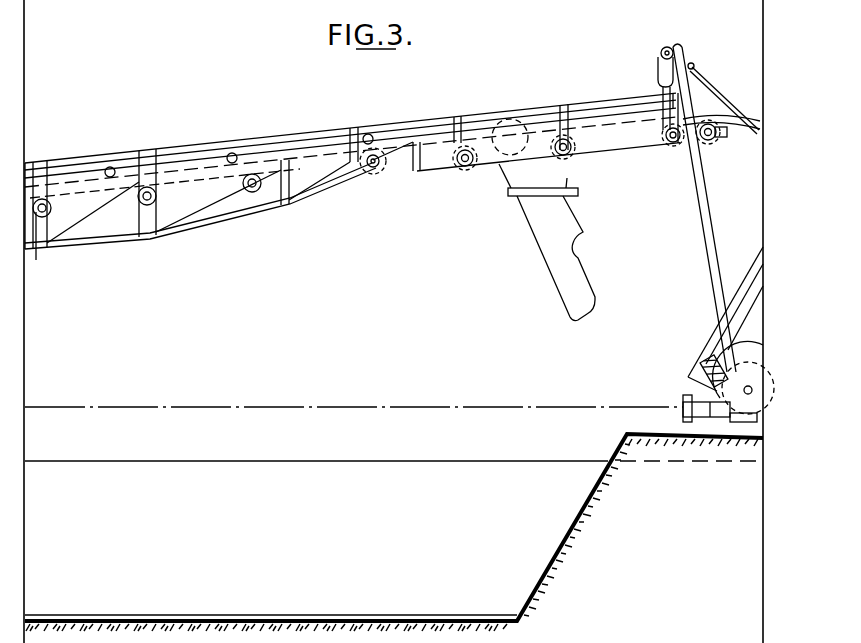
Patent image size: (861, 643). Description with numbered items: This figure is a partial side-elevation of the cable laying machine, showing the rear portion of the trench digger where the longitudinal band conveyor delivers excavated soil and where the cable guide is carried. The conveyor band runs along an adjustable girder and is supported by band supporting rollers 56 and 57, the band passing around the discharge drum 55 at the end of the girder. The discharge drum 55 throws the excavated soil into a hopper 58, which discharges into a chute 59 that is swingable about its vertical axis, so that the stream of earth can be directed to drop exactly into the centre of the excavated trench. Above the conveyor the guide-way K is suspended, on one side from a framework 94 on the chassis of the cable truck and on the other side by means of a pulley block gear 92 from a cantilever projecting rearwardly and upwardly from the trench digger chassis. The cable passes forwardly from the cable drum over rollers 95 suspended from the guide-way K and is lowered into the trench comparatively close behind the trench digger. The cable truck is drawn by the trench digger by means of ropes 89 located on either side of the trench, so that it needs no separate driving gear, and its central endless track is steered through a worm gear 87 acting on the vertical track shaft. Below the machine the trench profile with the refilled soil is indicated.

The guide-way K is at (47, 163).
The discharge drum 55 is at (511, 120).
The band supporting rollers 56 is at (112, 168).
The band supporting rollers 57 is at (36, 214).
The hopper 58 is at (538, 178).
The chute 59 is at (556, 258).
The worm gear 87 is at (743, 377).
The ropes 89 is at (354, 395).
The pulley block gear 92 is at (652, 88).
The framework 94 is at (716, 208).
The rollers 95 is at (384, 174).